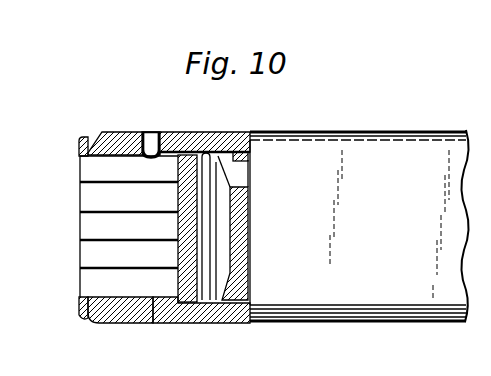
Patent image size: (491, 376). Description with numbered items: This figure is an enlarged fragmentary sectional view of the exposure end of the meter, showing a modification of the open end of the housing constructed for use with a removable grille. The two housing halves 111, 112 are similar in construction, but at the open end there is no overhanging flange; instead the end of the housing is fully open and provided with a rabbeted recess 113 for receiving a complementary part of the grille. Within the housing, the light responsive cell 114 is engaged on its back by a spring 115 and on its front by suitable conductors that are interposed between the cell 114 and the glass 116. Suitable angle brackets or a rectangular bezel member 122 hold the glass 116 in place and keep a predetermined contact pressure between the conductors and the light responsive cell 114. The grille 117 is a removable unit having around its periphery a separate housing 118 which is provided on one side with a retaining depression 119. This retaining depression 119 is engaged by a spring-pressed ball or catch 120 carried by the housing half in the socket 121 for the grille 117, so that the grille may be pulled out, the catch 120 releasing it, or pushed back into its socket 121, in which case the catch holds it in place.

The housing half 111 is at (328, 130).
The housing half 112 is at (310, 322).
The rabbeted recess 113 is at (87, 316).
The light responsive cell 114 is at (212, 240).
The spring 115 is at (220, 273).
The glass 116 is at (195, 222).
The grille 117 is at (101, 212).
The separate housing 118 is at (155, 299).
The retaining depression 119 is at (141, 154).
The spring-pressed ball or catch 120 is at (156, 132).
The socket 121 is at (197, 132).
The rectangular bezel member 122 is at (184, 314).